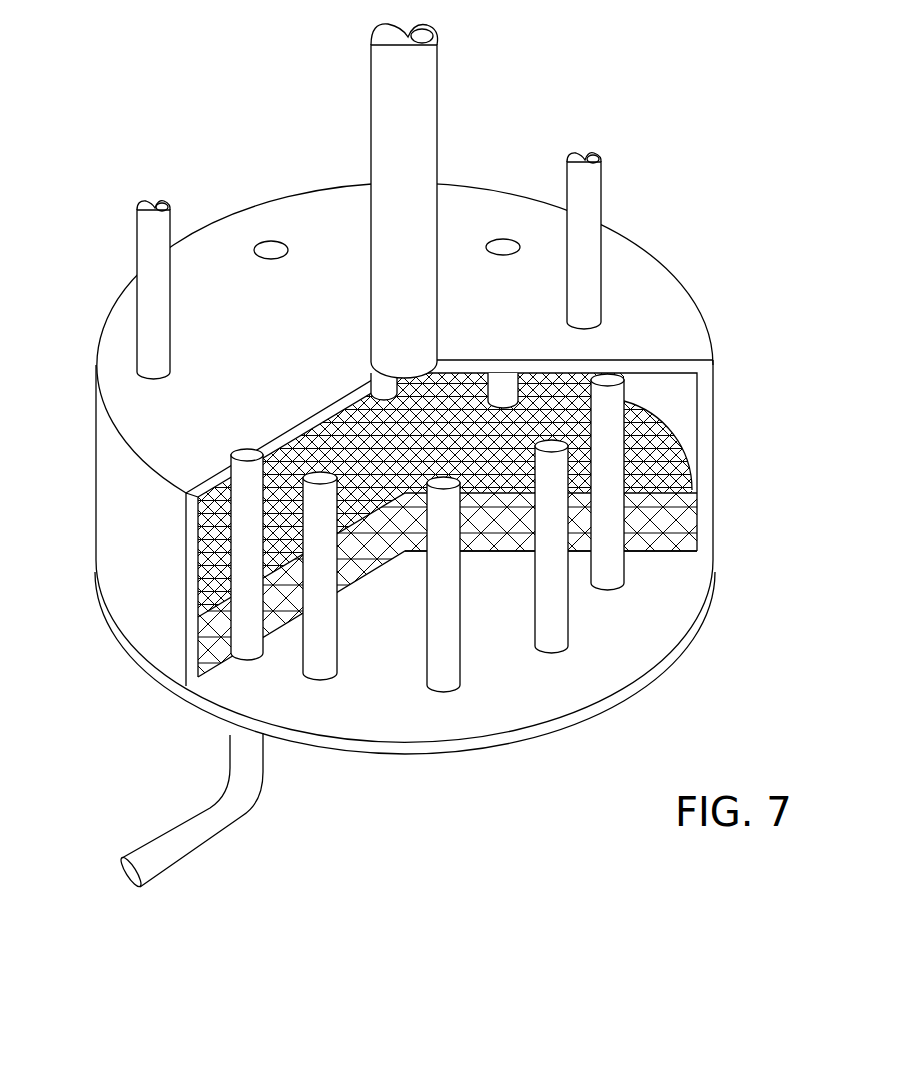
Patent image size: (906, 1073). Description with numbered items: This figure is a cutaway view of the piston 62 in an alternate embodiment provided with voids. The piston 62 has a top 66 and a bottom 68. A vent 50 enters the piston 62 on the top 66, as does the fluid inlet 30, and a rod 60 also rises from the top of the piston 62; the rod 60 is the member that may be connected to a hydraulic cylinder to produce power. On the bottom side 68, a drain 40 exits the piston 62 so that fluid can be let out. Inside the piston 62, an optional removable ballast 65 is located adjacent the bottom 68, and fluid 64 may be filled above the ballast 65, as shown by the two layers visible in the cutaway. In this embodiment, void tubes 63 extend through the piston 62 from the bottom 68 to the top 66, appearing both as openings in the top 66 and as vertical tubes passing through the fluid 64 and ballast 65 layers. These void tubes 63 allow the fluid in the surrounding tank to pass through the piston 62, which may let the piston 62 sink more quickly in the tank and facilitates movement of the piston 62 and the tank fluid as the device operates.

The fluid inlet 30 is at (587, 203).
The drain 40 is at (205, 825).
The vent 50 is at (147, 253).
The rod 60 is at (410, 103).
The piston 62 is at (128, 523).
The void tubes 63 is at (271, 241).
The fluid 64 is at (673, 428).
The removable ballast 65 is at (677, 532).
The top 66 is at (670, 305).
The bottom 68 is at (630, 620).